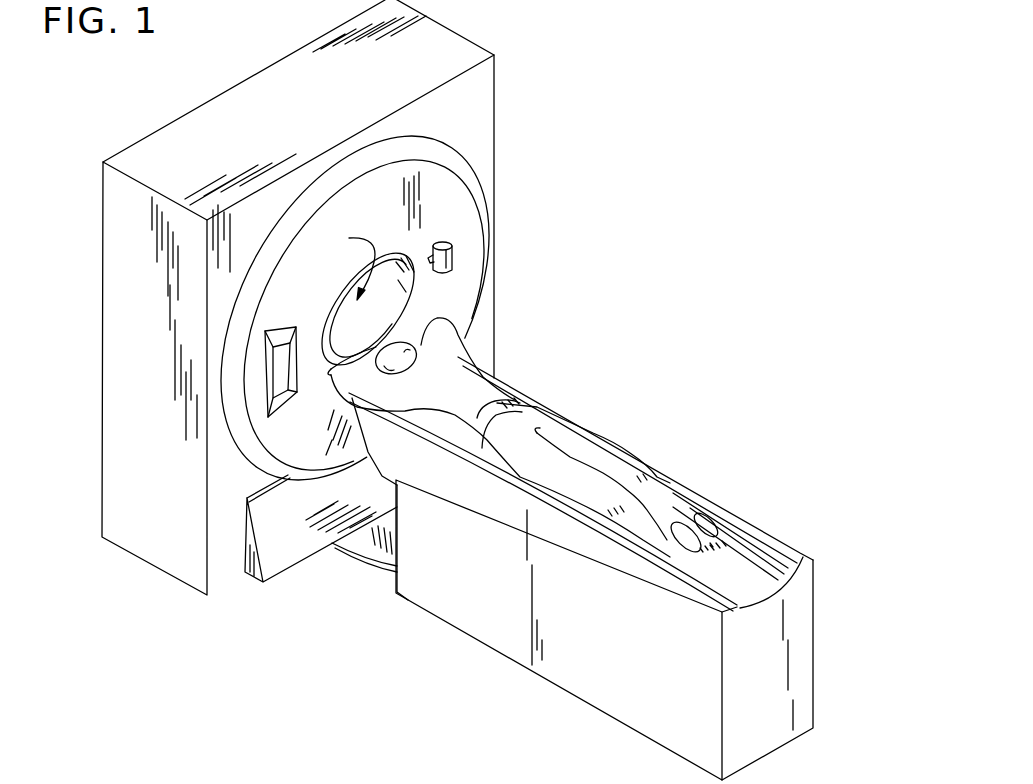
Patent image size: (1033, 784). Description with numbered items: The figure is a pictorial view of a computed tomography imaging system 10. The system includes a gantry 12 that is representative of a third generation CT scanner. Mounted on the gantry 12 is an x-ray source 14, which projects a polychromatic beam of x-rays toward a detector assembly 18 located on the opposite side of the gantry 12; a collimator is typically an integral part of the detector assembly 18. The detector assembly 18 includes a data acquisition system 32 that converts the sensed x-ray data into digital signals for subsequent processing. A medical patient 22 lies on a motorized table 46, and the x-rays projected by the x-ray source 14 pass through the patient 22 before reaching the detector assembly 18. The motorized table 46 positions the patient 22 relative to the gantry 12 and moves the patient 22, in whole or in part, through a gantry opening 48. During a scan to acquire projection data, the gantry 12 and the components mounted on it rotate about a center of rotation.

The computed tomography (CT) imaging system 10 is at (633, 262).
The gantry 12 is at (467, 217).
The x-ray source 14 is at (453, 257).
The detector assembly 18 is at (284, 399).
The medical patient 22 is at (493, 377).
The data acquisition system (DAS) 32 is at (282, 328).
The motorized table 46 is at (622, 703).
The gantry opening 48 is at (347, 264).